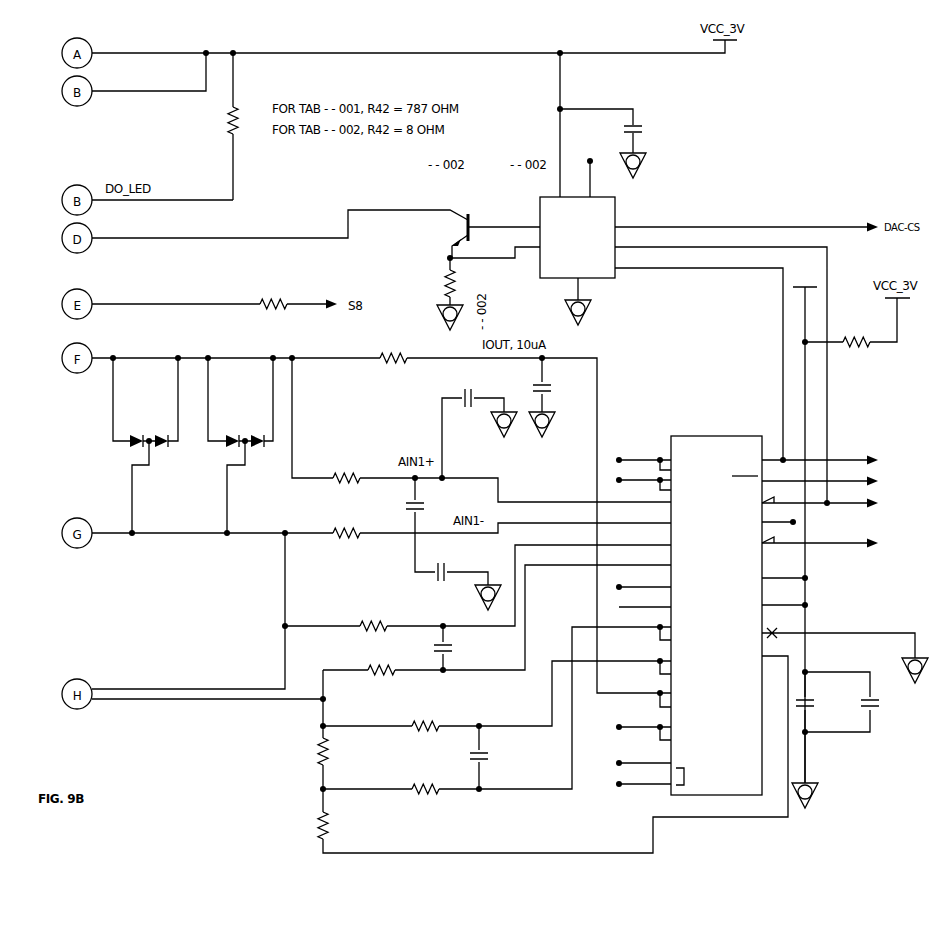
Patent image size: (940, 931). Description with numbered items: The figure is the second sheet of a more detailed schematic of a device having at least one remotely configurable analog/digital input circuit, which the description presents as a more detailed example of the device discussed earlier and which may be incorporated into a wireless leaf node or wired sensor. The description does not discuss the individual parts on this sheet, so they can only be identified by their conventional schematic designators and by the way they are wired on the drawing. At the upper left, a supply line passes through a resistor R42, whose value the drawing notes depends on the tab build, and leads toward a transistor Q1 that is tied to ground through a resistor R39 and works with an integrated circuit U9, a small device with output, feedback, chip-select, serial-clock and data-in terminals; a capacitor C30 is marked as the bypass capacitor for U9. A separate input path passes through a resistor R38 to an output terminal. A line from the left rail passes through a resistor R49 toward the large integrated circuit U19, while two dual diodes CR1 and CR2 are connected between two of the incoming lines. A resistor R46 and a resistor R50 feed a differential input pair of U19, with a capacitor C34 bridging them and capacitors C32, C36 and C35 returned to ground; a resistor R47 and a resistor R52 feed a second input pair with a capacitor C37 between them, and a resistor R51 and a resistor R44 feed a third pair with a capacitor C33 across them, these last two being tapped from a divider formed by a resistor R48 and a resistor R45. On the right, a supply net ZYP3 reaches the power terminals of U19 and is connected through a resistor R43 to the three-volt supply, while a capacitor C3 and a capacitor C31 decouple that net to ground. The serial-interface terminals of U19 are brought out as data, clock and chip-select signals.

The resistor R42 is at (219, 126).
The transistor Q1 is at (466, 224).
The resistor R39 is at (441, 294).
The DAC U9 is at (628, 218).
The bypass capacitor C30 is at (639, 150).
The net ZYP3 is at (804, 525).
The resistor R43 is at (857, 322).
The resistor R38 is at (214, 284).
The resistor R49 is at (393, 351).
The dual diode CR1 is at (145, 445).
The dual diode CR2 is at (240, 445).
The resistor R50 is at (346, 525).
The resistor R46 is at (346, 469).
The capacitor C32 is at (479, 427).
The capacitor C36 is at (550, 397).
The capacitor C34 is at (424, 525).
The capacitor C35 is at (467, 581).
The resistor R47 is at (372, 617).
The capacitor C37 is at (454, 648).
The resistor R52 is at (380, 661).
The resistor R48 is at (310, 751).
The resistor R45 is at (310, 825).
The resistor R51 is at (424, 717).
The capacitor C33 is at (490, 757).
The resistor R44 is at (424, 780).
The ADC U19 is at (772, 607).
The capacitor C3 is at (811, 740).
The capacitor C31 is at (853, 702).